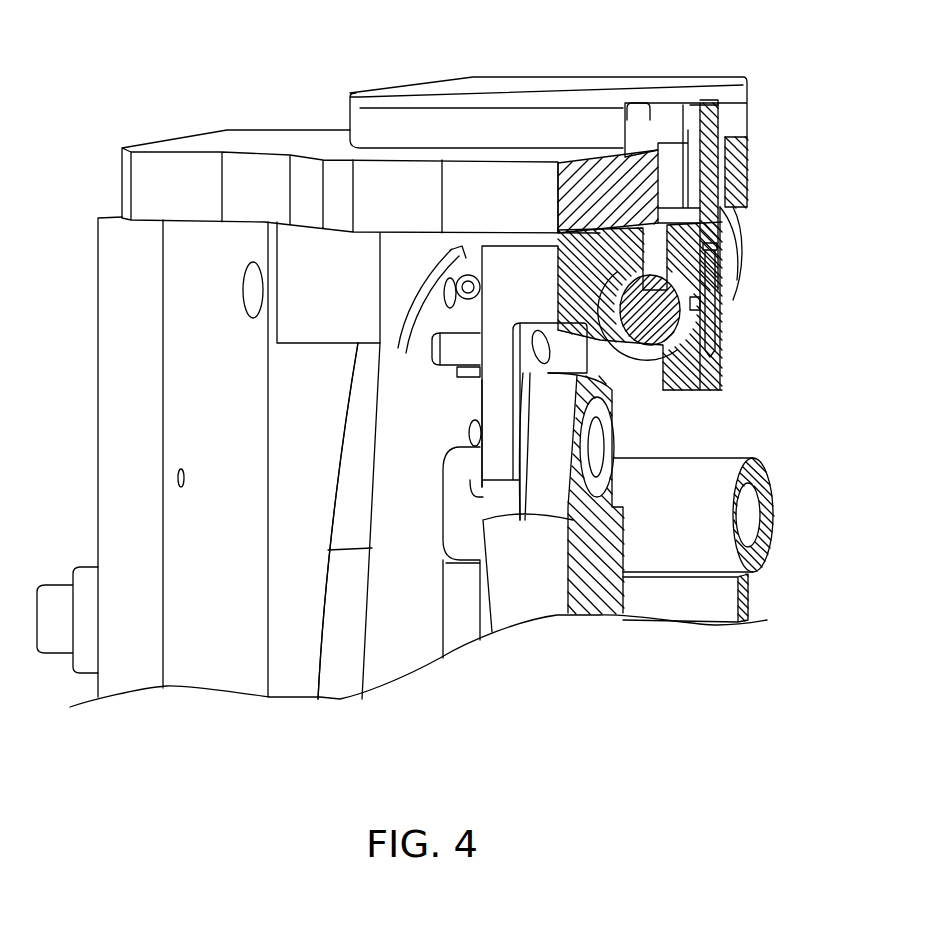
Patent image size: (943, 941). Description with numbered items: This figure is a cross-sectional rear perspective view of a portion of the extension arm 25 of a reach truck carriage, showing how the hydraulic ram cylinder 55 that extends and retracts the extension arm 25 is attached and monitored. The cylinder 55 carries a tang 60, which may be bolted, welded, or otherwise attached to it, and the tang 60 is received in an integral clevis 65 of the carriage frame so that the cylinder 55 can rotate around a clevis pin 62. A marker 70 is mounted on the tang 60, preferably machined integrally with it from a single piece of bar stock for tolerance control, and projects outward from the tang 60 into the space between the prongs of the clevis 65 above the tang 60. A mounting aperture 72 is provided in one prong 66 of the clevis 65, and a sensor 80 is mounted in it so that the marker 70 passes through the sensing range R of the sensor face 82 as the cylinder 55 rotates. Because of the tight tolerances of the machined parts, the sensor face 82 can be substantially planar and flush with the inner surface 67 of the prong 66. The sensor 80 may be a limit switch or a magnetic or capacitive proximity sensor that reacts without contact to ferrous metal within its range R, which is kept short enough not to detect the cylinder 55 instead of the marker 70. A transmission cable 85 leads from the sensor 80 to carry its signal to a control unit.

The extension arm 25 is at (743, 600).
The hydraulic ram cylinder 55 is at (548, 600).
The tang 60 is at (600, 412).
The clevis pin 62 is at (595, 447).
The clevis 65 is at (724, 246).
The prong 66 is at (482, 397).
The inner surface 67 is at (523, 375).
The marker 70 is at (587, 355).
The mounting aperture 72 is at (540, 345).
The sensor 80 is at (460, 343).
The sensor face 82 is at (545, 340).
The transmission cable 85 is at (403, 353).
The sensing range R is at (632, 100).